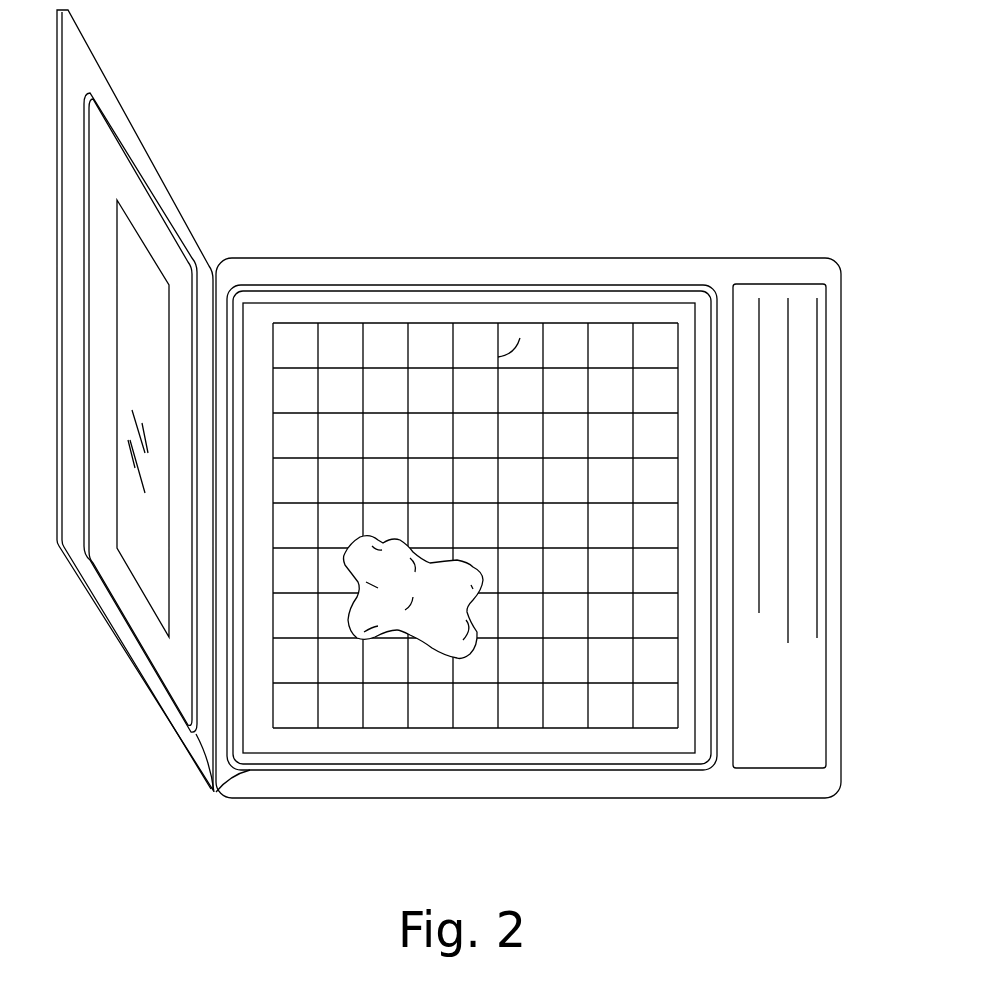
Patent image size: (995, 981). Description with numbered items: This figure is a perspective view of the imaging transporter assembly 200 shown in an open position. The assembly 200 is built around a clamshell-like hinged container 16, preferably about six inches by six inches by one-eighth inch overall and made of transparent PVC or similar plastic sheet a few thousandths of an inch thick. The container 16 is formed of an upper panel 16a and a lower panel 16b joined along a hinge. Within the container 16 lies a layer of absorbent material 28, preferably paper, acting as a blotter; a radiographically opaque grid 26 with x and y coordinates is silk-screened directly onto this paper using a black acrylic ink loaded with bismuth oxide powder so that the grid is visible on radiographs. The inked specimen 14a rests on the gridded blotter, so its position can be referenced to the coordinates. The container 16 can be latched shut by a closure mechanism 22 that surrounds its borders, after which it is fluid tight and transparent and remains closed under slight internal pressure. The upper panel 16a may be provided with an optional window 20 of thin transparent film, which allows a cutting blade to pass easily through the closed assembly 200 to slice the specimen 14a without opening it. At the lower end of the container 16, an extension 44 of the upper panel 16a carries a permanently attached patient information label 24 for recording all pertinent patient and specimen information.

The imaging transporter assembly 200 is at (474, 160).
The hinged container 16 is at (233, 263).
The upper panel 16a is at (112, 102).
The lower panel 16b is at (627, 786).
The window 20 is at (150, 295).
The closure mechanism 22 is at (212, 792).
The layer of absorbent material 28 is at (350, 312).
The radiographically opaque grid 26 is at (520, 338).
The inked specimen 14a is at (430, 613).
The extension 44 is at (805, 268).
The patient information label 24 is at (810, 337).